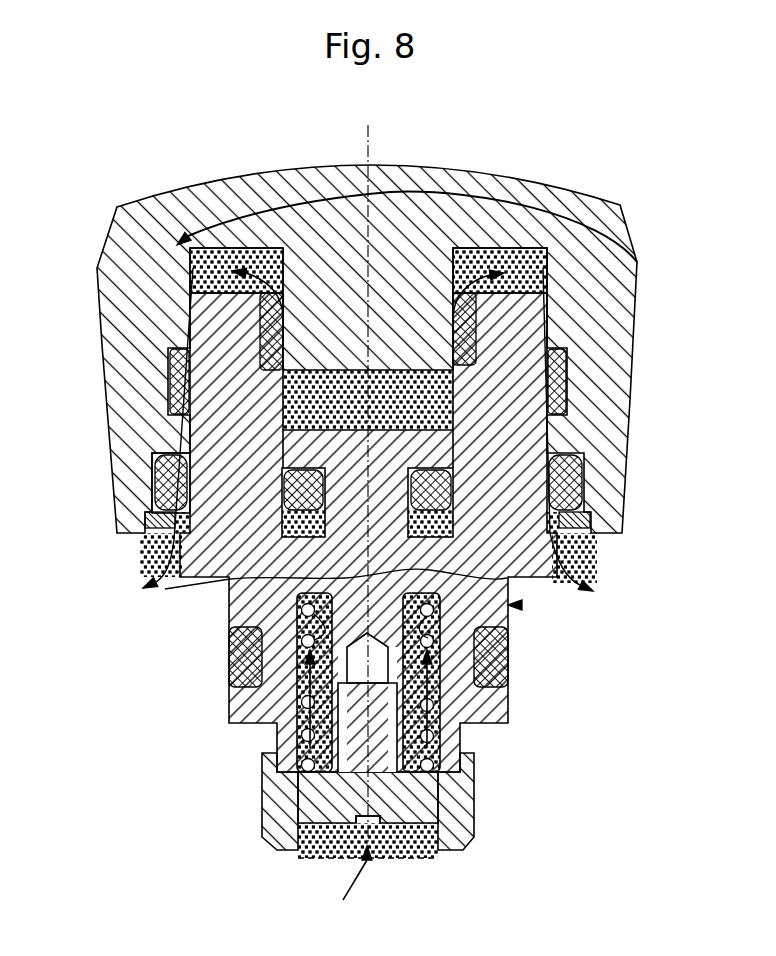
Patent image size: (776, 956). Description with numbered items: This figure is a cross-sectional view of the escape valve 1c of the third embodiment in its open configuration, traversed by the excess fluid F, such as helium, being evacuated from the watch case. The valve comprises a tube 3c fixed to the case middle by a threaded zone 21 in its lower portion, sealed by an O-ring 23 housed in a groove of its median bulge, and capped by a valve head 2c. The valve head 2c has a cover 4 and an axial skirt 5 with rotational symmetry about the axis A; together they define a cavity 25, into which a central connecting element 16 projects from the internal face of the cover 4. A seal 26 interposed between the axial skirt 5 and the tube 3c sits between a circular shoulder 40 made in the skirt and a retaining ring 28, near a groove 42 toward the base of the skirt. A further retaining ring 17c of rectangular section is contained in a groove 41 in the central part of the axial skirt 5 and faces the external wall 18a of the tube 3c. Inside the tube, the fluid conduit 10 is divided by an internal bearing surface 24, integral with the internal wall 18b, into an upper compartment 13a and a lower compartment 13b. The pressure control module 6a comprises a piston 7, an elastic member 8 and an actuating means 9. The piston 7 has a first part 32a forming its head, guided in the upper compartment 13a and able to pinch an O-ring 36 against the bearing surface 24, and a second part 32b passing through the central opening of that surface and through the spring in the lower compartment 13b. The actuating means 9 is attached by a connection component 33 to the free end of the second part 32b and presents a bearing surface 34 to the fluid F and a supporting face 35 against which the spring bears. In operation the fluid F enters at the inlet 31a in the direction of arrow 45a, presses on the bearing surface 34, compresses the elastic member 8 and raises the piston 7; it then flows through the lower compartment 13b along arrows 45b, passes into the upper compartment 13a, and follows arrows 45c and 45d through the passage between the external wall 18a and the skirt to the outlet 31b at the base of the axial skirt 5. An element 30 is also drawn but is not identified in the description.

The escape valve 1c is at (607, 815).
The valve head 2c is at (176, 177).
The tube 3c is at (510, 579).
The cover 4 is at (545, 197).
The axial skirt 5 is at (628, 418).
The pressure control module 6a is at (556, 662).
The piston 7 is at (508, 663).
The elastic member 8 is at (482, 707).
The actuating means 9 is at (445, 770).
The fluid conduit 10 is at (443, 410).
The upper compartment 13a is at (155, 456).
The lower compartment 13b is at (297, 687).
The central connecting element 16 is at (570, 238).
The retaining ring 17c is at (418, 410).
The external wall 18a is at (148, 554).
The internal wall 18b is at (193, 425).
The threaded zone 21 is at (455, 812).
The O-ring 23 is at (497, 640).
The internal bearing surface 24 is at (280, 543).
The cavity 25 is at (197, 273).
The seal 26 is at (152, 483).
The retaining ring 28 is at (588, 533).
The shoulder 30 is at (583, 590).
The inlet 31a is at (362, 847).
The outlet 31b is at (585, 522).
The first part 32a is at (386, 437).
The second part 32b is at (229, 657).
The connection component 33 is at (340, 752).
The bearing surface 34 is at (417, 825).
The supporting face 35 is at (300, 763).
The O-ring 36 is at (180, 577).
The circular shoulder 40 is at (590, 456).
The groove 41 is at (168, 352).
The groove 42 is at (145, 520).
The arrow 45a is at (340, 886).
The arrows 45b is at (296, 596).
The arrows 45c is at (262, 303).
The arrows 45d is at (140, 584).
The axis of rotation A is at (367, 481).
The fluid F is at (397, 843).